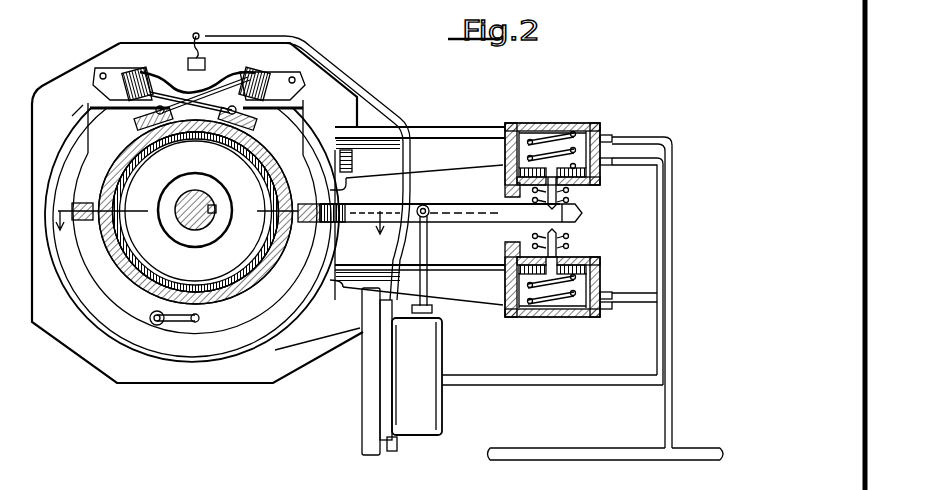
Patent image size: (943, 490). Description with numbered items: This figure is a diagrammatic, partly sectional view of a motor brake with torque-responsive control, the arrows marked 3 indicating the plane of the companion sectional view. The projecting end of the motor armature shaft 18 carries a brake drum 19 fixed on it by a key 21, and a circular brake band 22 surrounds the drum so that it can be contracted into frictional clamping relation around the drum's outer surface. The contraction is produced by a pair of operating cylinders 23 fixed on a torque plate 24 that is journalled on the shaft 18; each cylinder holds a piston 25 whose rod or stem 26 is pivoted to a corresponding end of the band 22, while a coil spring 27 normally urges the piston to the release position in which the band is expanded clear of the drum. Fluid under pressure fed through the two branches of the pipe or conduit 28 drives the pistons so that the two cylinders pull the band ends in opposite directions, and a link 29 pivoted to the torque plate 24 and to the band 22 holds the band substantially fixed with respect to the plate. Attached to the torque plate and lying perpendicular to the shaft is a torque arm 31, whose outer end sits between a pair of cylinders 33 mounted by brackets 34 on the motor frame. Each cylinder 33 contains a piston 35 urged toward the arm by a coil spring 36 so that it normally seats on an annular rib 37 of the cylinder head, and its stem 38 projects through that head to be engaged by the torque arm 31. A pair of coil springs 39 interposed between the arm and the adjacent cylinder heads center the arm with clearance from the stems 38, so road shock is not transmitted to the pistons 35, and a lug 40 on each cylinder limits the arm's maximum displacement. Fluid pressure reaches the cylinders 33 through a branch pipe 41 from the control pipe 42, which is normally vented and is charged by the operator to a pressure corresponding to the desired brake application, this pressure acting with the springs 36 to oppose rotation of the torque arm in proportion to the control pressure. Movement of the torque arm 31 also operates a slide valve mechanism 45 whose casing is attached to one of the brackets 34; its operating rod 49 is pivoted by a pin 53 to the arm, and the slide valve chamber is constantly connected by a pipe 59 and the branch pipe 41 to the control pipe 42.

The section line 3- 3 is at (219, 235).
The motor armature shaft 18 is at (208, 232).
The brake drum 19 is at (118, 250).
The key 21 is at (218, 212).
The brake band 22 is at (276, 258).
The operating cylinders 23 is at (134, 70).
The torque plate 24 is at (100, 131).
The piston 25 is at (256, 68).
The rod or stem 26 is at (222, 95).
The coil spring 27 is at (268, 104).
The pipe or conduit 28 is at (346, 90).
The link 29 is at (173, 326).
The torque arm 31 is at (463, 209).
The cylinders 33 is at (584, 122).
The brackets 34 is at (452, 121).
The piston 35 is at (600, 172).
The coil spring 36 is at (556, 133).
The annular rib 37 is at (594, 183).
The stem 38 is at (578, 214).
The coil springs 39 is at (570, 193).
The lug 40 is at (506, 186).
The branch pipe 41 is at (672, 337).
The control pipe 42 is at (590, 449).
The slide valve mechanism 45 is at (446, 355).
The operating rod 49 is at (426, 254).
The pin 53 is at (437, 197).
The pipe 59 is at (565, 383).